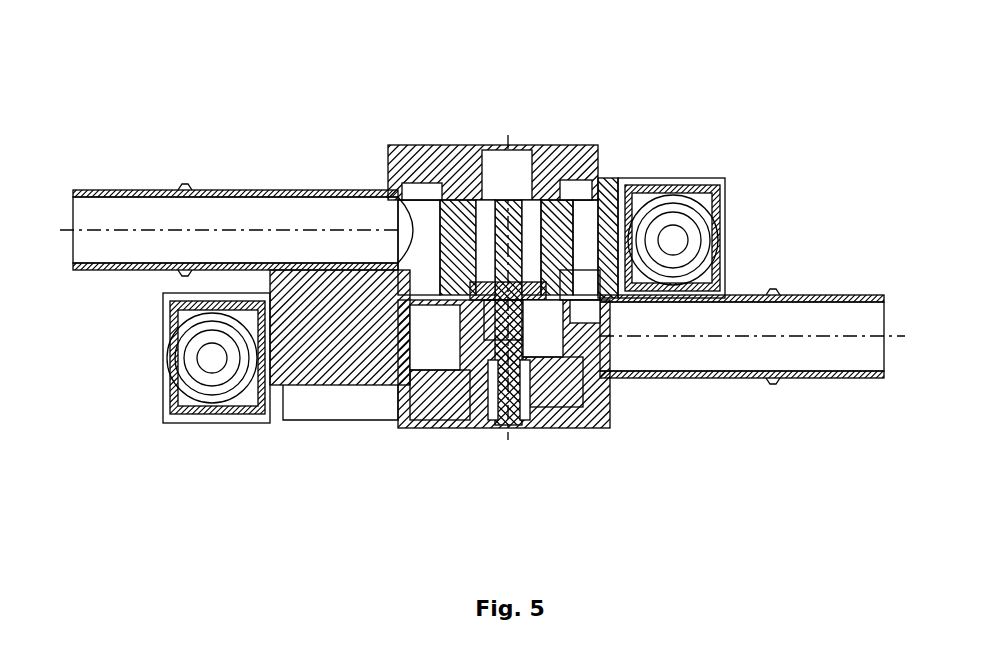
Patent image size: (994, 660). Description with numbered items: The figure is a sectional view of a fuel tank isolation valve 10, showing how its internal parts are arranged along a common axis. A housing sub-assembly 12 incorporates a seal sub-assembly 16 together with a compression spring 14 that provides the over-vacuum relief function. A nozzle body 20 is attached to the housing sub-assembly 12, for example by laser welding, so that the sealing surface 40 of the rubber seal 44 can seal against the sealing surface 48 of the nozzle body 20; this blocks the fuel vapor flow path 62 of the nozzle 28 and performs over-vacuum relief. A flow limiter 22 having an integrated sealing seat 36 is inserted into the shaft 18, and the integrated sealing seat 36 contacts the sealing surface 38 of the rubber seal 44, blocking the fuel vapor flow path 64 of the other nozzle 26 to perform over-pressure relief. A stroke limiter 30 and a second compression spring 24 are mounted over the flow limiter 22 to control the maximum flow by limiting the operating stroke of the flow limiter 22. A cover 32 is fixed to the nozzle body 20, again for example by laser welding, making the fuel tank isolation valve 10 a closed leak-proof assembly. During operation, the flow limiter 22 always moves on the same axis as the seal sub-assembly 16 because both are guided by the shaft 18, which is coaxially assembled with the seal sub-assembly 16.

The fuel tank isolation valve 10 is at (777, 91).
The housing sub-assembly 12 is at (590, 405).
The compression spring 14 is at (497, 410).
The seal sub-assembly 16 is at (523, 410).
The shaft 18 is at (434, 410).
The nozzle body 20 is at (287, 332).
The flow limiter 22 is at (548, 245).
The compression spring 24 is at (512, 200).
The nozzle 26 is at (263, 197).
The nozzle 28 is at (732, 298).
The stroke limiter 30 is at (462, 197).
The cover 32 is at (457, 163).
The integrated sealing seat 36 is at (595, 280).
The sealing surface 38 is at (470, 290).
The sealing surface 40 is at (452, 293).
The rubber seal 44 is at (500, 337).
The sealing surface 48 is at (565, 292).
The fuel vapor flow path 62 is at (783, 322).
The fuel vapor flow path 64 is at (222, 197).